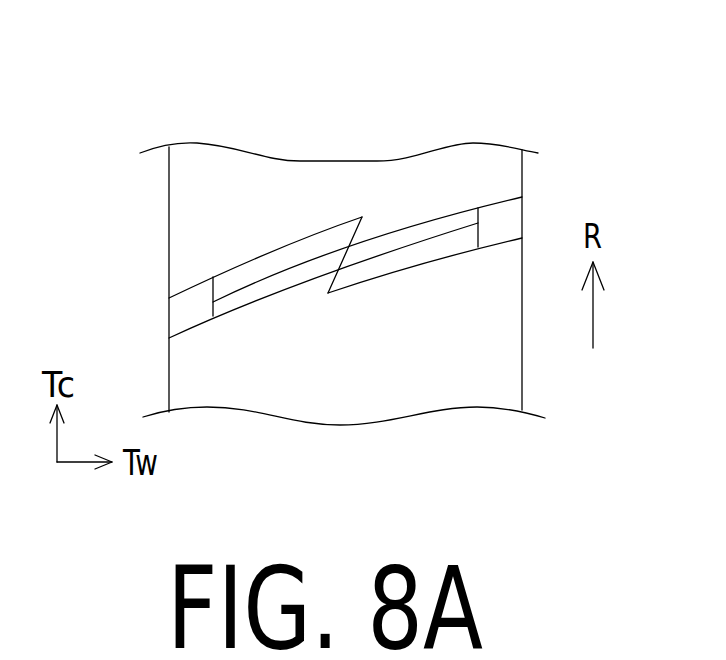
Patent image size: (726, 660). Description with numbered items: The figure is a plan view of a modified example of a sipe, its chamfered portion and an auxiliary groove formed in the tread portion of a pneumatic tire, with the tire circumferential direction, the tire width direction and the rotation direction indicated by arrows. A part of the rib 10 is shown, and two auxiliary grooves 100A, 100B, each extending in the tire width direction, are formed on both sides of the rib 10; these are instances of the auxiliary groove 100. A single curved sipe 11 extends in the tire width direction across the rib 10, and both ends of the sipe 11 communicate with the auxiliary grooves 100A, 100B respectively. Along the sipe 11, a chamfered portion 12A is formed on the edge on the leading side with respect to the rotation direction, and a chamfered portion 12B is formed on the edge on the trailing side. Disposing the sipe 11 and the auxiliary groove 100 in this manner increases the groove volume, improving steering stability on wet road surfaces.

The rib 10 is at (520, 110).
The sipe 11 is at (318, 267).
The chamfered portion 12A is at (283, 260).
The chamfered portion 12B is at (398, 257).
The auxiliary groove 100 is at (343, 266).
The auxiliary groove 100A is at (195, 302).
The auxiliary groove 100B is at (502, 225).